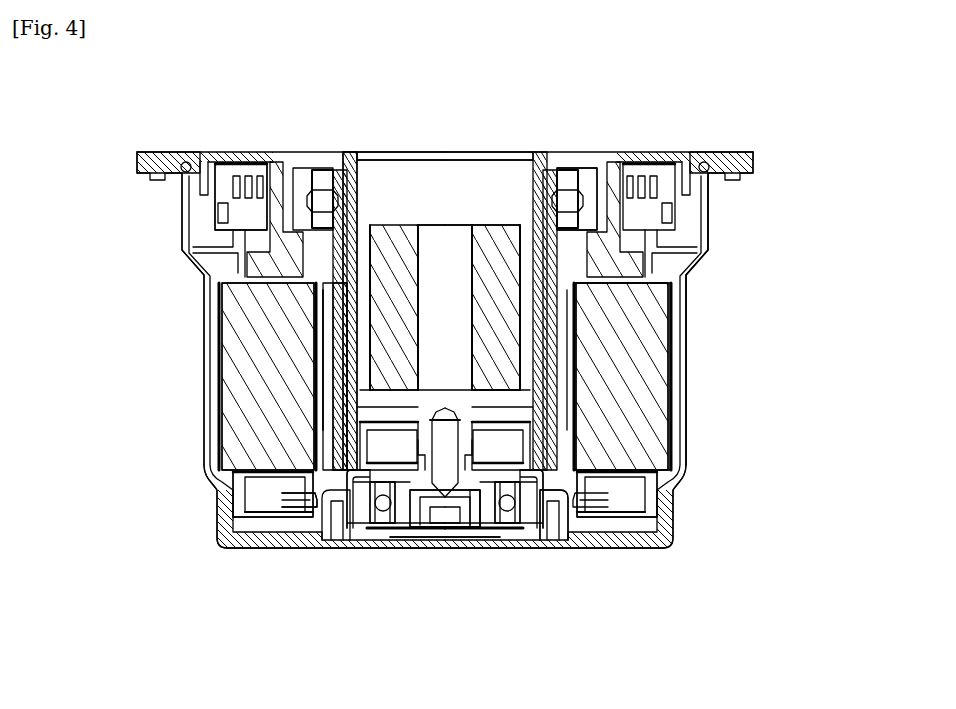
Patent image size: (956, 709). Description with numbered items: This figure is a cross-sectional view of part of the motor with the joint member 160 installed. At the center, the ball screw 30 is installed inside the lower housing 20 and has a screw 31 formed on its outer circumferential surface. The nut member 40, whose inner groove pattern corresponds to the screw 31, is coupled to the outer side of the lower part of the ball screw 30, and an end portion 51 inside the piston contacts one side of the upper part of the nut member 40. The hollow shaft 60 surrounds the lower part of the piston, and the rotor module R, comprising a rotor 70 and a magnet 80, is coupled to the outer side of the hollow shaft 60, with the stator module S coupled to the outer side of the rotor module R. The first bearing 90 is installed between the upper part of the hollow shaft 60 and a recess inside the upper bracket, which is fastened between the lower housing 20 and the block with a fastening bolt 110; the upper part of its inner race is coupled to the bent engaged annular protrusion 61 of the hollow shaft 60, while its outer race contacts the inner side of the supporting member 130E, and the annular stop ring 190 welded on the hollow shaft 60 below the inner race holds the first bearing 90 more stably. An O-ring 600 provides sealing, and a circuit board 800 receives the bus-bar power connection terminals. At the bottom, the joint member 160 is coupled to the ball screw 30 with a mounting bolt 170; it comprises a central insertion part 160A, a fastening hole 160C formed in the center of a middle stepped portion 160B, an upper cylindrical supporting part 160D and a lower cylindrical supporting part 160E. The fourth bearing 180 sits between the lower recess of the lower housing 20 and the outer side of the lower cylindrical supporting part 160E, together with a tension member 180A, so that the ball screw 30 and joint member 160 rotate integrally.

The lower housing 20 is at (210, 455).
The ball screw 30 is at (640, 420).
The screw 31 is at (288, 345).
The nut member 40 is at (545, 385).
The end portion 51 is at (257, 297).
The hollow shaft 60 is at (377, 170).
The bent engaged annular protrusion 61 is at (347, 152).
The rotor 70 is at (330, 377).
The magnet 80 is at (320, 428).
The first bearing 90 is at (700, 210).
The fastening bolt 110 is at (153, 182).
The supporting member 130E is at (213, 520).
The joint member 160 is at (405, 528).
The central insertion part 160A is at (657, 517).
The middle stepped portion 160B is at (500, 548).
The fastening hole 160C is at (437, 550).
The upper cylindrical supporting part 160D is at (297, 512).
The lower cylindrical supporting part 160E is at (550, 540).
The mounting bolt 170 is at (452, 548).
The fourth bearing 180 is at (362, 530).
The tension member 180A is at (545, 540).
The annular stop ring 190 is at (500, 325).
The O-ring 600 is at (743, 175).
The circuit board 800 is at (682, 268).
The rotor module R is at (80, 368).
The stator module S is at (647, 447).